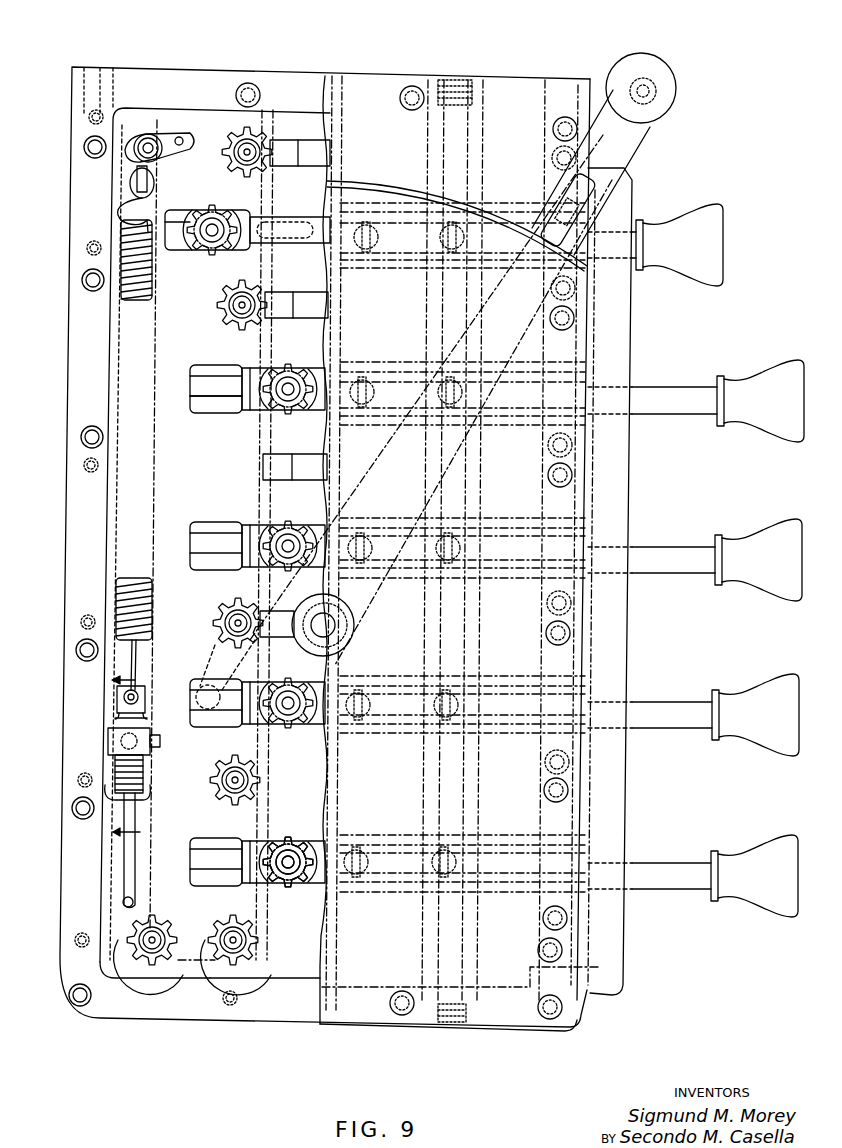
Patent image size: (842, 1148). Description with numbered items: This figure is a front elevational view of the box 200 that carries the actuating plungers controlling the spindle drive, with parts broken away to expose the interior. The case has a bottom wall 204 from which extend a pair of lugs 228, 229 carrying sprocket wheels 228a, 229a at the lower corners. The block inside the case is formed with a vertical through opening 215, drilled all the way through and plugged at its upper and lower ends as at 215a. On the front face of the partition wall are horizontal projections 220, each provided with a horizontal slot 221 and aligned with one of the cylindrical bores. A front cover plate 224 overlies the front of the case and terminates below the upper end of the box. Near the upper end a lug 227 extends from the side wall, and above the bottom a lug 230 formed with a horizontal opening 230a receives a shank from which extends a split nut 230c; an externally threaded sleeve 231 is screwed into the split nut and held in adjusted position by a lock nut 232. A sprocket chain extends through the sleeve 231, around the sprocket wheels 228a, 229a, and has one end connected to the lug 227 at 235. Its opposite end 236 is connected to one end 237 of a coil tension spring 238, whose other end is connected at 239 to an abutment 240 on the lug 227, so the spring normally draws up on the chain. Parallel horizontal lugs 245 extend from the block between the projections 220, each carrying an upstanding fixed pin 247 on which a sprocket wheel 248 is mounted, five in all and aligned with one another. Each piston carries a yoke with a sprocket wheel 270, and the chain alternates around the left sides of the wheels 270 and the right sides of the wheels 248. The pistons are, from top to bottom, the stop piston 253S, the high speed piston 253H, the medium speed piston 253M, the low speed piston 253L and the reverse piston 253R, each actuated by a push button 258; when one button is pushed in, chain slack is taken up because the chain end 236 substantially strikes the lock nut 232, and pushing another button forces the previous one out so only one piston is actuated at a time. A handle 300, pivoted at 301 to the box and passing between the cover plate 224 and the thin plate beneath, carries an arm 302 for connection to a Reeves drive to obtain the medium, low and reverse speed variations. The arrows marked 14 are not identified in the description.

The direction of movement arrow 14 is at (149, 758).
The box 200 is at (357, 1032).
The bottom wall 204 is at (258, 1010).
The vertical through opening 215 is at (458, 498).
The plug 215a is at (456, 80).
The horizontal projection 220 is at (303, 216).
The horizontal slot 221 is at (212, 392).
The front cover plate 224 is at (386, 185).
The lug 227 is at (126, 157).
The lug 228 is at (117, 975).
The sprocket wheel 228a is at (142, 968).
The lug 229 is at (266, 987).
The sprocket wheel 229a is at (222, 970).
The lug 230 is at (150, 790).
The horizontal opening 230a is at (160, 744).
The split nut 230c is at (108, 742).
The externally threaded sleeve 231 is at (115, 773).
The lock nut 232 is at (115, 713).
The chain end connection 235 is at (150, 136).
The chain end 236 is at (137, 694).
The spring end 237 is at (128, 668).
The coil tension spring 238 is at (123, 300).
The spring connection 239 is at (135, 200).
The abutment 240 is at (150, 182).
The horizontal lug 245 is at (308, 148).
The upstanding pin 247 is at (258, 304).
The sprocket wheel 248 is at (228, 300).
The stop piston 253S is at (675, 285).
The high speed piston 253H is at (670, 422).
The medium speed piston 253M is at (668, 578).
The low speed piston 253L is at (665, 736).
The reverse piston 253R is at (667, 900).
The push button 258 is at (702, 240).
The sprocket wheel 270 is at (293, 840).
The handle 300 is at (640, 142).
The pivot 301 is at (332, 625).
The arm 302 is at (218, 658).